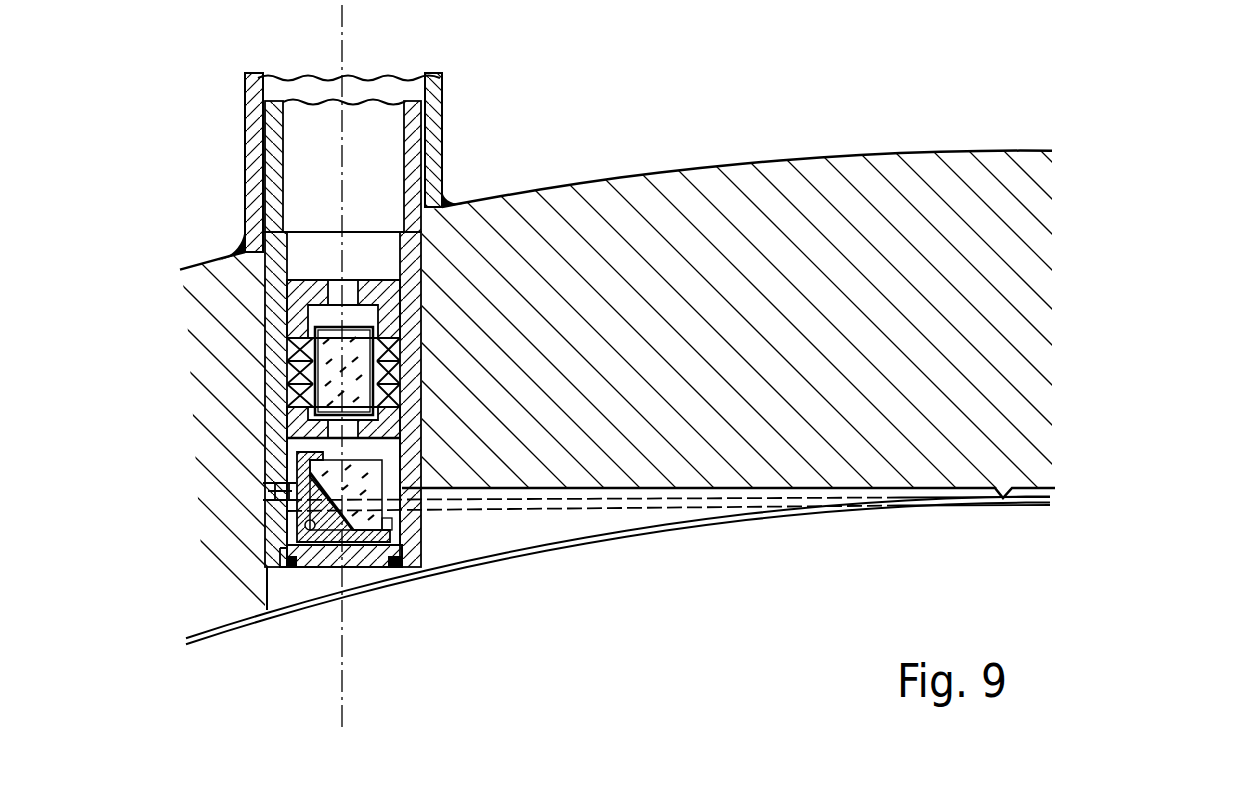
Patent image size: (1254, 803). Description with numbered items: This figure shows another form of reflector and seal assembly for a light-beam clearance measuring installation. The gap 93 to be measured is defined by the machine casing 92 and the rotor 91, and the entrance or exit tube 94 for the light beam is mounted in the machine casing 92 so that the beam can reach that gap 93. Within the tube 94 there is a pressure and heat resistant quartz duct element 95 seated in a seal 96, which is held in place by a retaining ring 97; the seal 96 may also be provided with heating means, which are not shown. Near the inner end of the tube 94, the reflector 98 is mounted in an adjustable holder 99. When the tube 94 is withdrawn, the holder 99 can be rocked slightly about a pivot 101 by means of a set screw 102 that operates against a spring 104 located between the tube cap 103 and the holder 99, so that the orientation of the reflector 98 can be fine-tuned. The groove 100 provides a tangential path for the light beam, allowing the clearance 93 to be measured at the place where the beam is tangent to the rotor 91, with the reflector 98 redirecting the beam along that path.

The rotor 91 is at (968, 557).
The machine casing 92 is at (977, 435).
The gap 93 is at (1047, 503).
The tube 94 is at (274, 105).
The quartz duct element 95 is at (290, 367).
The seal 96 is at (290, 402).
The retaining ring 97 is at (285, 287).
The reflector 98 is at (275, 485).
The adjustable holder 99 is at (285, 525).
The groove 100 is at (478, 528).
The pivot 101 is at (308, 542).
The set screw 102 is at (297, 510).
The tube cap 103 is at (364, 548).
The spring 104 is at (353, 548).